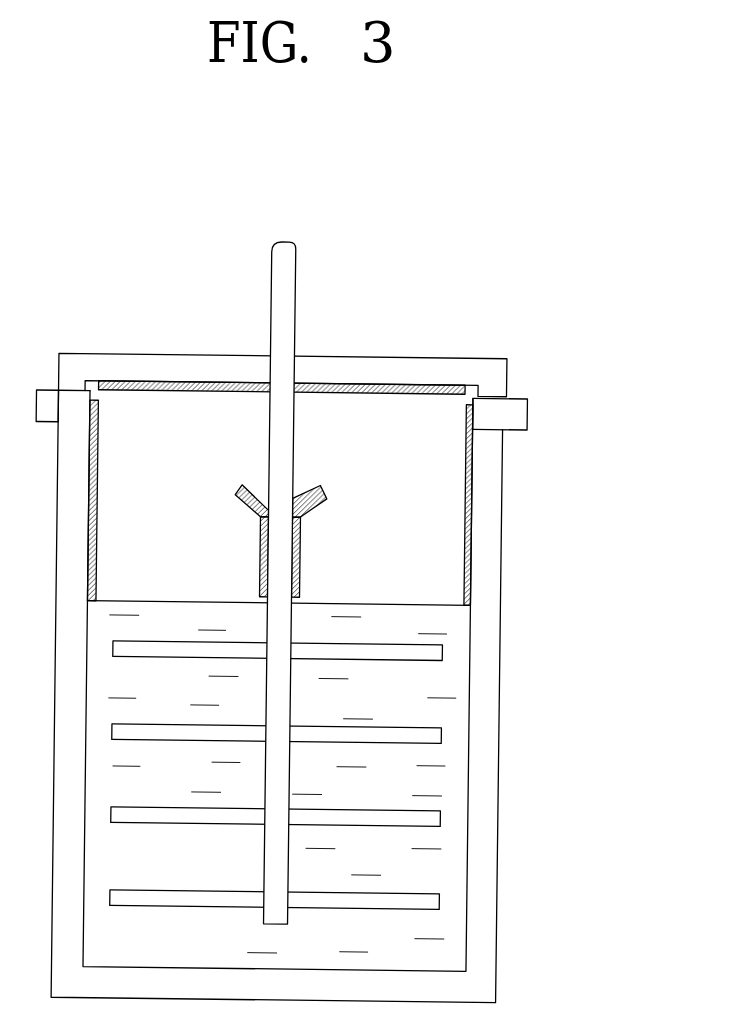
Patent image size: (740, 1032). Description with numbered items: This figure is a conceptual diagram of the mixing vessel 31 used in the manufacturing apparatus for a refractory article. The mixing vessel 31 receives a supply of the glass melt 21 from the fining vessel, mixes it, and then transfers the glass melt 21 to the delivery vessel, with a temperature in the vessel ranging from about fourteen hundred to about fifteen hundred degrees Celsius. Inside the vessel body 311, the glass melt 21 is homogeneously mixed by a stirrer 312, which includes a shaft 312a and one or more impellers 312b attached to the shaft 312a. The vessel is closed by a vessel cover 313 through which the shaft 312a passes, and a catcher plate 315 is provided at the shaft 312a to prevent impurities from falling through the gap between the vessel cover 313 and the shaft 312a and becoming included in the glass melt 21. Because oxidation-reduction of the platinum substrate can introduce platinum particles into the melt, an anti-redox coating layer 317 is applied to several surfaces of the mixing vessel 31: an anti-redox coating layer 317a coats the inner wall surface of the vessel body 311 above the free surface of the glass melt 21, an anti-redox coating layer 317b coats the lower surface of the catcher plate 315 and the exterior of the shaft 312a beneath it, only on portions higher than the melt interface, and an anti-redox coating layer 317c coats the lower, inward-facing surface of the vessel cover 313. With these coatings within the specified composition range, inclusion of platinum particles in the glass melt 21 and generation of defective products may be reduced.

The mixing vessel 31 is at (357, 583).
The vessel body 311 is at (484, 800).
The stirrer 312 is at (397, 584).
The shaft 312a is at (280, 695).
The impellers 312b is at (435, 652).
The vessel cover 313 is at (446, 365).
The catcher plate 315 is at (320, 482).
The anti-redox coating layer 317 is at (385, 494).
The anti-redox coating layer 317a is at (467, 473).
The anti-redox coating layer 317b is at (298, 558).
The anti-redox coating layer 317c is at (432, 392).
The glass melt 21 is at (445, 871).